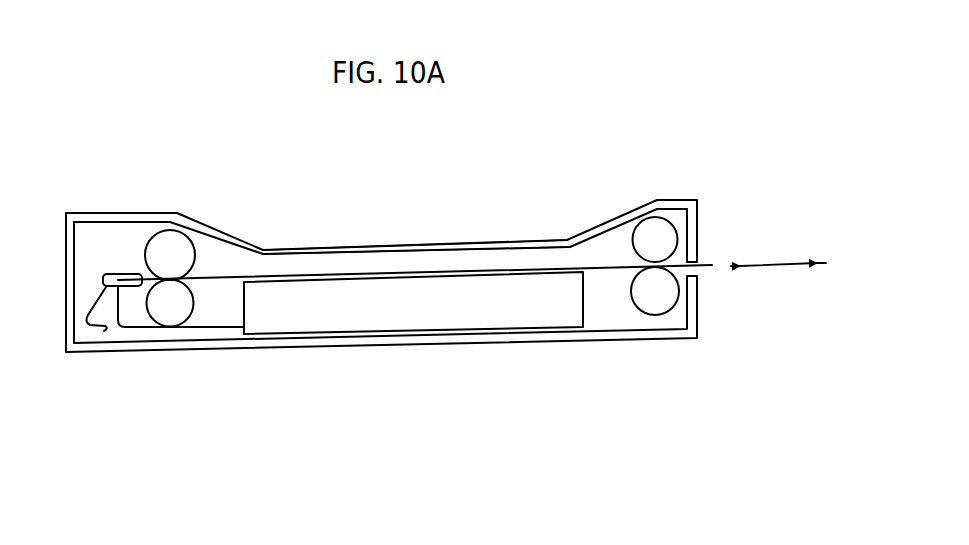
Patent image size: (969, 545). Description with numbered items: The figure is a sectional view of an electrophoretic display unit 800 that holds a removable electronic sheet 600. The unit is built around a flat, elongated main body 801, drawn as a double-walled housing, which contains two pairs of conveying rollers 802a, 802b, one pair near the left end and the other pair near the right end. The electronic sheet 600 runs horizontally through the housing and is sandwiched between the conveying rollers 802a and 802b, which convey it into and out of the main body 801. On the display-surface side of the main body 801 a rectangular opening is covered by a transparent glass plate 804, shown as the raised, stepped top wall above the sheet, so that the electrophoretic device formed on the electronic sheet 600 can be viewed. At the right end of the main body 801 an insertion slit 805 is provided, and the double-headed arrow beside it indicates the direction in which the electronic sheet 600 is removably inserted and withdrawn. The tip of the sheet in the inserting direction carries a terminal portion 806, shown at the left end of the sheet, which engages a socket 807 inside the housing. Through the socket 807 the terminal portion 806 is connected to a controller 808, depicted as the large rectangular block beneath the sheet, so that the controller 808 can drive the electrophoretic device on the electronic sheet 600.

The electrophoretic display unit 800 is at (694, 138).
The main body 801 is at (135, 217).
The conveying rollers 802a is at (198, 226).
The conveying rollers 802b is at (657, 213).
The transparent glass plate 804 is at (494, 239).
The insertion slit 805 is at (704, 266).
The terminal portion 806 is at (114, 273).
The socket 807 is at (102, 325).
The controller 808 is at (383, 320).
The electronic sheet 600 is at (399, 269).